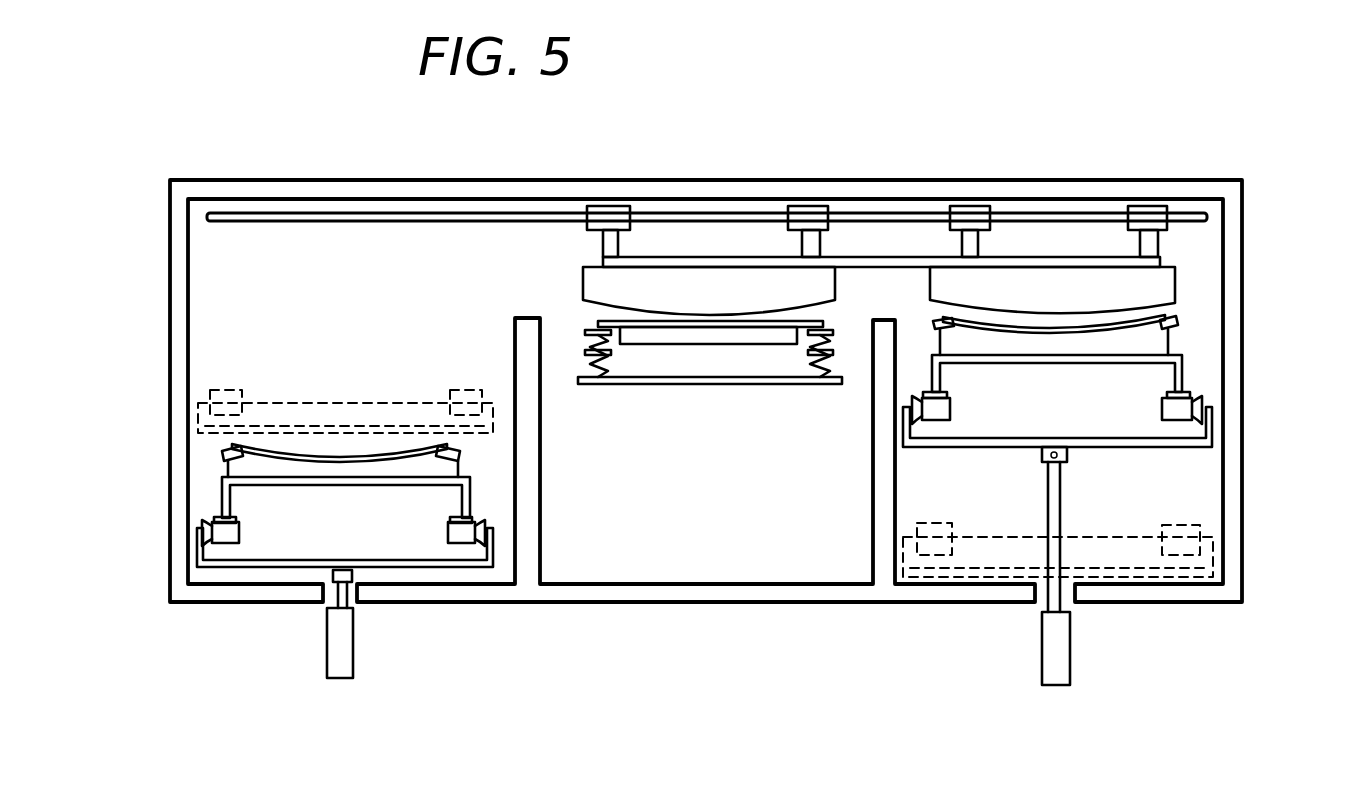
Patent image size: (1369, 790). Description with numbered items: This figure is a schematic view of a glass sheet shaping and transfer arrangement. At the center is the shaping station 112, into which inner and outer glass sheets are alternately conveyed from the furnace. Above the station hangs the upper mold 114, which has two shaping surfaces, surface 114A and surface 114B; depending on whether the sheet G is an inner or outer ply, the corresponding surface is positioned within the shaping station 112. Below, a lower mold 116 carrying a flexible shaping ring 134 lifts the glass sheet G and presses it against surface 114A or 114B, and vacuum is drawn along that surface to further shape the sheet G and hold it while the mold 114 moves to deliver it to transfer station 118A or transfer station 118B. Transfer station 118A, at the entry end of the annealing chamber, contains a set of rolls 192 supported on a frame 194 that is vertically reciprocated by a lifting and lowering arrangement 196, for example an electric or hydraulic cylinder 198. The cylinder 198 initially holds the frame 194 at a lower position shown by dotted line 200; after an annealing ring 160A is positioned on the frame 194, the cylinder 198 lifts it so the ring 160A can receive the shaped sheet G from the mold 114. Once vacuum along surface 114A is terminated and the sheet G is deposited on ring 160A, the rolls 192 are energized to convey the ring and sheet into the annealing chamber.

The shaping station 112 is at (720, 153).
The transfer station 118A is at (1083, 158).
The transfer station 118B is at (378, 155).
The upper mold 114 is at (775, 272).
The surface 114A is at (1172, 305).
The surface 114B is at (583, 302).
The annealing ring 160A is at (1178, 323).
The lower mold 116 is at (718, 385).
The flexible shaping ring 134 is at (593, 330).
The rolls 192 is at (1175, 437).
The frame 194 is at (977, 447).
The lifting and lowering arrangement 196 is at (1057, 582).
The cylinder 198 is at (1070, 655).
The dotted line 200 is at (988, 577).
The glass sheet G is at (803, 320).